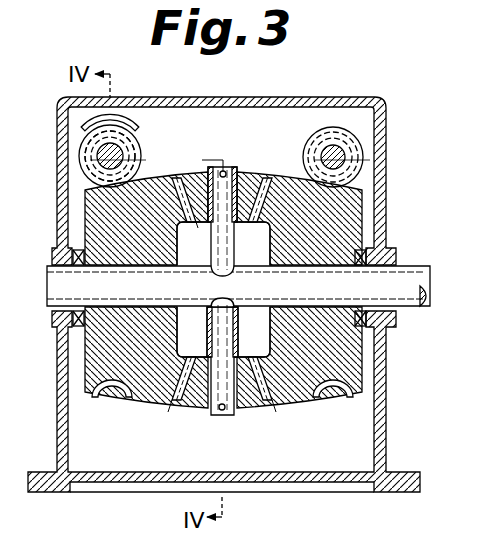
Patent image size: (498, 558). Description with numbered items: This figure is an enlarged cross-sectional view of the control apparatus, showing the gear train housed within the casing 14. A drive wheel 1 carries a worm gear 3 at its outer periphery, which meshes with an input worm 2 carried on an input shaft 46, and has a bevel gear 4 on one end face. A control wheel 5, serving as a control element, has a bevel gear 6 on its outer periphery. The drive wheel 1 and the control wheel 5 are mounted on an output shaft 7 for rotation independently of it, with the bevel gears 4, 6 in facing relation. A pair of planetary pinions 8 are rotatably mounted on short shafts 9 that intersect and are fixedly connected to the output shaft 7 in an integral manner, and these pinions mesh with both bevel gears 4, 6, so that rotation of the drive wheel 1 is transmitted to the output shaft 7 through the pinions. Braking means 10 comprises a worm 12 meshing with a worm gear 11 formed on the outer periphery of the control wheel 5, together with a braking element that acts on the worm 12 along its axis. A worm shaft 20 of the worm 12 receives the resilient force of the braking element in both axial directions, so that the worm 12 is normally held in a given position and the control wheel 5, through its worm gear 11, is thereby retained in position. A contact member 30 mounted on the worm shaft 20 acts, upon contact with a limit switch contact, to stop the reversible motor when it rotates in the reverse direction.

The drive wheel 1 is at (352, 216).
The input worm 2 is at (360, 156).
The worm gear 3 is at (352, 173).
The bevel gear 4 is at (270, 196).
The control wheel 5 is at (96, 362).
The bevel gear 6 is at (182, 197).
The output shaft 7 is at (429, 284).
The planetary pinions 8 is at (236, 178).
The short shafts 9 is at (235, 245).
The braking means 10 is at (79, 161).
The worm gear 11 is at (92, 200).
The worm 12 is at (140, 150).
The casing 14 is at (288, 97).
The worm shaft 20 is at (104, 154).
The contact member 30 is at (122, 118).
The input shaft 46 is at (321, 150).